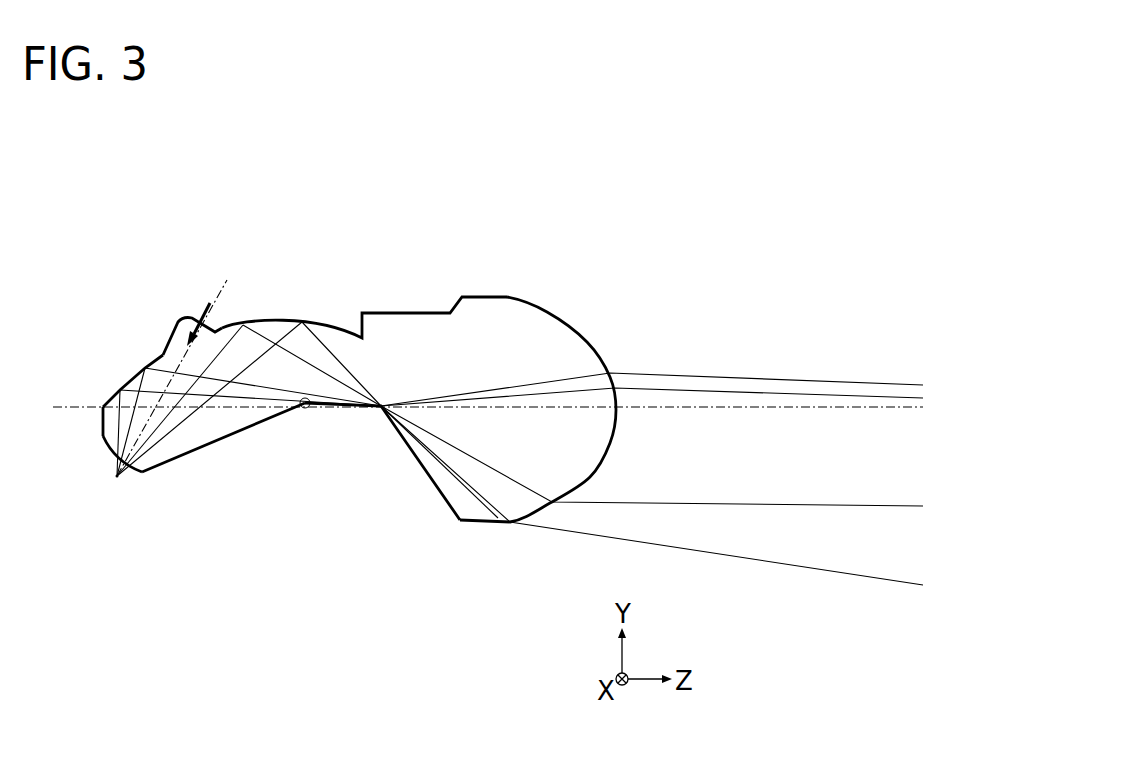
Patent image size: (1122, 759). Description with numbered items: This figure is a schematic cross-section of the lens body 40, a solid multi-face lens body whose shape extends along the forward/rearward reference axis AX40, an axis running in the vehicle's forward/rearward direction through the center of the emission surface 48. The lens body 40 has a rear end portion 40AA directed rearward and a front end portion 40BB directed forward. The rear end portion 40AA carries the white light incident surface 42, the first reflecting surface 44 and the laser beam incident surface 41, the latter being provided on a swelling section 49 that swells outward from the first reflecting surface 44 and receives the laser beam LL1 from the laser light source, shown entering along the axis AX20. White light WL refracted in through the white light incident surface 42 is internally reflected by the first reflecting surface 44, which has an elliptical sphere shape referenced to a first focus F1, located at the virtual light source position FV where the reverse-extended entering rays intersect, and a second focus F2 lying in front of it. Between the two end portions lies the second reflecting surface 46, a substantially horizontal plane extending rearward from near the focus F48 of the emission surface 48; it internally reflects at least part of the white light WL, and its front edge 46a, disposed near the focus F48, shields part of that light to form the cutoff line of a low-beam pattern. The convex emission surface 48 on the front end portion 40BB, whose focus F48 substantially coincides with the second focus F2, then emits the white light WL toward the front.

The lens body 40 is at (344, 332).
The rear end portion 40AA is at (132, 370).
The front end portion 40BB is at (552, 372).
The laser beam incident surface 41 is at (185, 308).
The white light incident surface 42 is at (113, 458).
The first reflecting surface 44 is at (325, 329).
The second reflecting surface 46 is at (305, 409).
The front edge 46a is at (382, 404).
The emission surface 48 is at (588, 335).
The swelling section 49 is at (172, 330).
The laser beam LL1 is at (203, 300).
The optical axis of projection lens AX20 is at (227, 287).
The forward/rearward reference axis AX40 is at (830, 409).
The white light WL is at (100, 432).
The first focus F1 is at (118, 480).
The virtual light source position FV is at (117, 476).
The second focus F2 is at (380, 408).
The focus of the emission surface F48 is at (381, 406).